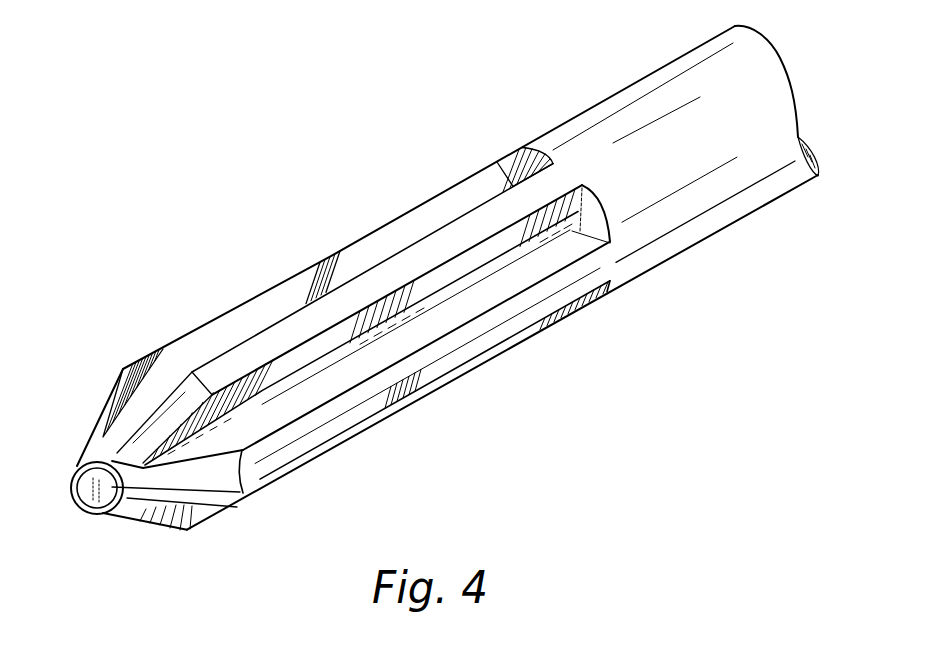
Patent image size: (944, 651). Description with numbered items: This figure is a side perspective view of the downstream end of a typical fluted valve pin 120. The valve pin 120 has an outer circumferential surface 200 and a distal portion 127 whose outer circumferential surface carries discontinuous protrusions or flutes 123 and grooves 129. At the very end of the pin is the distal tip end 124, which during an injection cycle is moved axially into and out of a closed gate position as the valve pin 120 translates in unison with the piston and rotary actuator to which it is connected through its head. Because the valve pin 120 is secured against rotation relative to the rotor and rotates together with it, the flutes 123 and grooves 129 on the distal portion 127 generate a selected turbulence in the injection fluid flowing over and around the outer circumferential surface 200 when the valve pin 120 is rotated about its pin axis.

The valve pin 120 is at (617, 81).
The flutes 123 is at (307, 330).
The distal tip end 124 is at (99, 506).
The distal portion 127 is at (280, 268).
The grooves 129 is at (445, 313).
The outer circumferential surface 200 is at (617, 291).